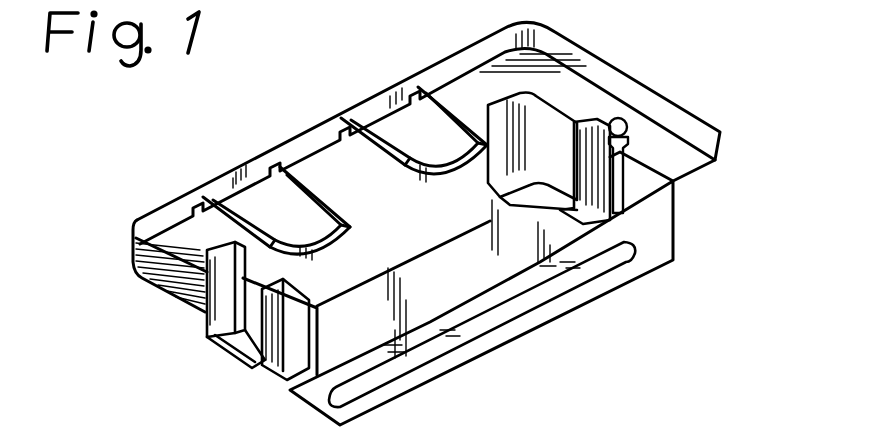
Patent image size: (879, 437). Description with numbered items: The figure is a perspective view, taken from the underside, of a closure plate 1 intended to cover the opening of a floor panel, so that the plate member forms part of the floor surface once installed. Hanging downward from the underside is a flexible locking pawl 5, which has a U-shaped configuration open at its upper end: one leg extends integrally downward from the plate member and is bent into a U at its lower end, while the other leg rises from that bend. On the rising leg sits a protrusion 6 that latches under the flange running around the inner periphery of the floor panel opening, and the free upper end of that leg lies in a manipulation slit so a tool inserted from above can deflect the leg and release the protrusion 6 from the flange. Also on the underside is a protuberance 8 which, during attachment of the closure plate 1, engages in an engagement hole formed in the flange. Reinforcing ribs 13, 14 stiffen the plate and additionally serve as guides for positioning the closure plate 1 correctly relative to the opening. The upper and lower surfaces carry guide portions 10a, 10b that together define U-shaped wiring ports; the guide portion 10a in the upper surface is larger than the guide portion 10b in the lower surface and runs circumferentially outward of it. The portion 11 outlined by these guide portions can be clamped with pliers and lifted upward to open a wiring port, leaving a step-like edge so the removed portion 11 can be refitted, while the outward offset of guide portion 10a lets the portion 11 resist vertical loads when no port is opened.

The closure plate 1 is at (710, 118).
The flexible locking pawl 5 is at (266, 368).
The protrusion 6 is at (615, 188).
The protuberance 8 is at (620, 118).
The guide portion in the upper surface 10a is at (283, 132).
The guide portion in the lower surface 10b is at (424, 168).
The portion outlined by the guide portion 11 is at (243, 211).
The reinforcing rib 13 is at (540, 323).
The reinforcing rib 14 is at (210, 338).